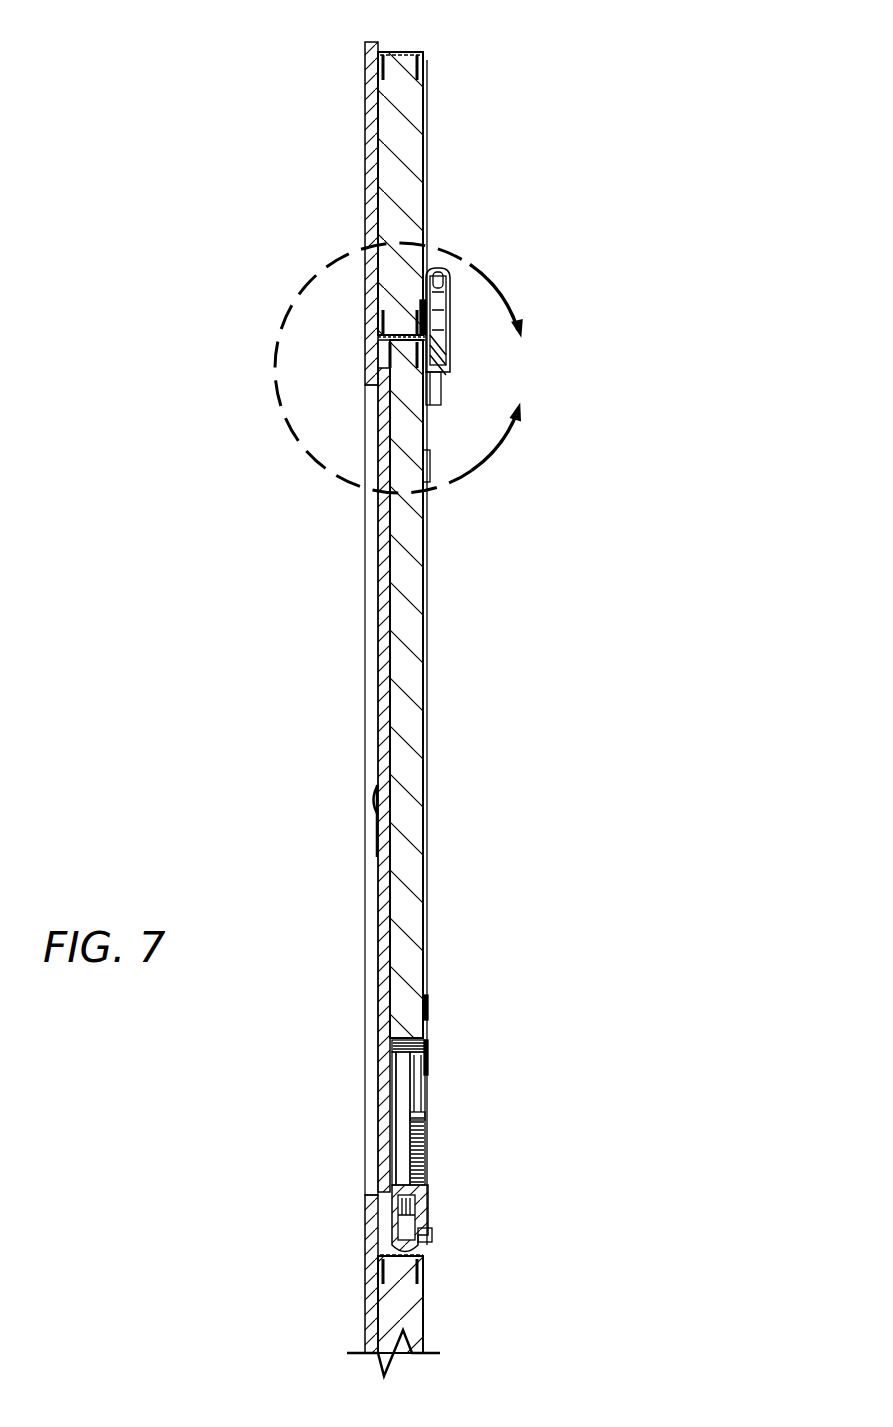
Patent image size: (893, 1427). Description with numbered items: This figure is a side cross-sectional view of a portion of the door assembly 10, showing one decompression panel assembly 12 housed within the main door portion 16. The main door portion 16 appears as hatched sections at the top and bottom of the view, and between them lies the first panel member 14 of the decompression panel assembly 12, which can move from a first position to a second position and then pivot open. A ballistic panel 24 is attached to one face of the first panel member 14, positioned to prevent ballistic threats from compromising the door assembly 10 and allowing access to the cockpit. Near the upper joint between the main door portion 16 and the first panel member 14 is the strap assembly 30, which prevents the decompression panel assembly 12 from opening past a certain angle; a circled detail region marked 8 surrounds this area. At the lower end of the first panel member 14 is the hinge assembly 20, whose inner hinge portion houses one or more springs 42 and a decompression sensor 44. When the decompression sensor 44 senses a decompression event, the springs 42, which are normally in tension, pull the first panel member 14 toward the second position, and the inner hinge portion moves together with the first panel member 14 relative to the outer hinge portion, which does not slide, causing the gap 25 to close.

The door assembly 10 is at (480, 72).
The decompression panel assembly 12 is at (512, 540).
The first panel member 14 is at (407, 687).
The main door portion 16 is at (400, 150).
The hinge assembly 20 is at (493, 1221).
The ballistic panel 24 is at (375, 107).
The gap 25 is at (428, 1050).
The strap assembly 30 is at (477, 295).
The spring 42 is at (425, 1163).
The decompression sensor 44 is at (405, 1145).
The detail view indicator 8 is at (402, 368).